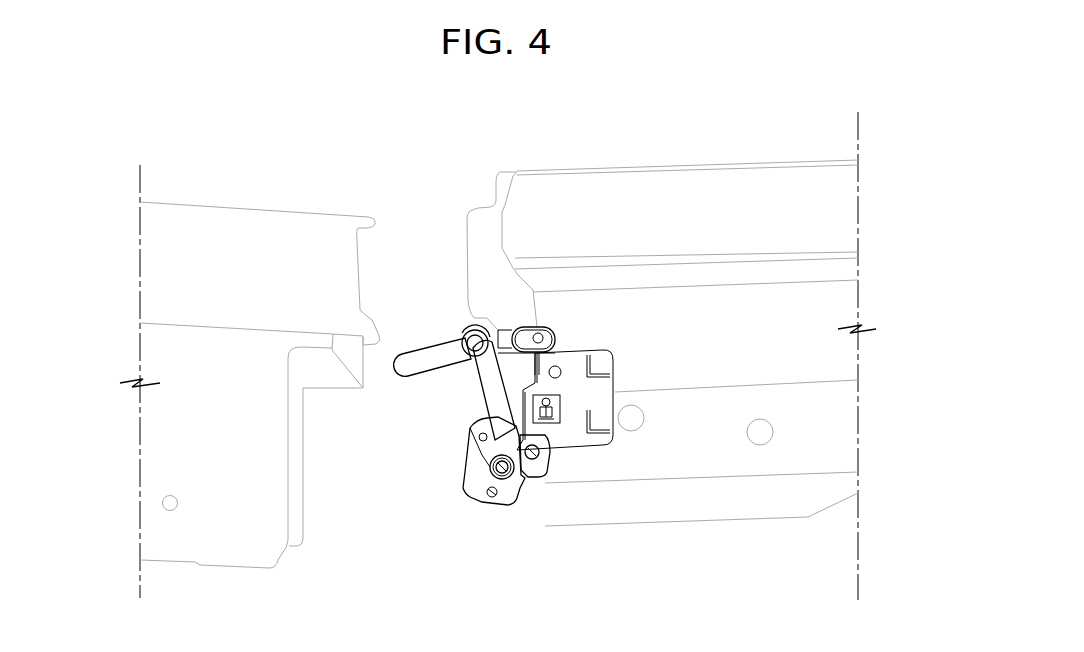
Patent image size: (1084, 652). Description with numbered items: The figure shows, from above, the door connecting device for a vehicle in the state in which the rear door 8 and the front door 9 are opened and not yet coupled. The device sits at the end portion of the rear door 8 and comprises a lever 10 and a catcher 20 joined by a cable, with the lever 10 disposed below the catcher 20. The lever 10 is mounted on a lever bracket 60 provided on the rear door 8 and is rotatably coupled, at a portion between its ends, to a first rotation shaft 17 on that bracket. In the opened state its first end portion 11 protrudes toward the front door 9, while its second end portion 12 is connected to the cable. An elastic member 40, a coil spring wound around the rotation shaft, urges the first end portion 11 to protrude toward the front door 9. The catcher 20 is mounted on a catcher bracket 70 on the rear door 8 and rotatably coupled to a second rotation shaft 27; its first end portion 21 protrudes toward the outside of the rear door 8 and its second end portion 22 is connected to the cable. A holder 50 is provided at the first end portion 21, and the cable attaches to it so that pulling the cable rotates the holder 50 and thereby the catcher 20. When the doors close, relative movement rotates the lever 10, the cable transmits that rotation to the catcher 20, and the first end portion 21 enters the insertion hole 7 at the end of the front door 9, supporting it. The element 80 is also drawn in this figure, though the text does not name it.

The insertion hole 7 is at (352, 355).
The rear door 8 is at (810, 367).
The front door 9 is at (217, 463).
The lever 10 is at (425, 352).
The first end portion 11 is at (413, 357).
The second end portion 12 is at (500, 343).
The first rotation shaft 17 is at (468, 350).
The elastic member 40 is at (468, 333).
The catcher 20 is at (492, 389).
The first end portion 21 is at (493, 408).
The second end portion 22 is at (488, 478).
The second rotation shaft 27 is at (505, 463).
The holder 50 is at (470, 480).
The lever bracket 60 is at (575, 432).
The catcher bracket 70 is at (545, 457).
The pivot support 80 is at (530, 463).